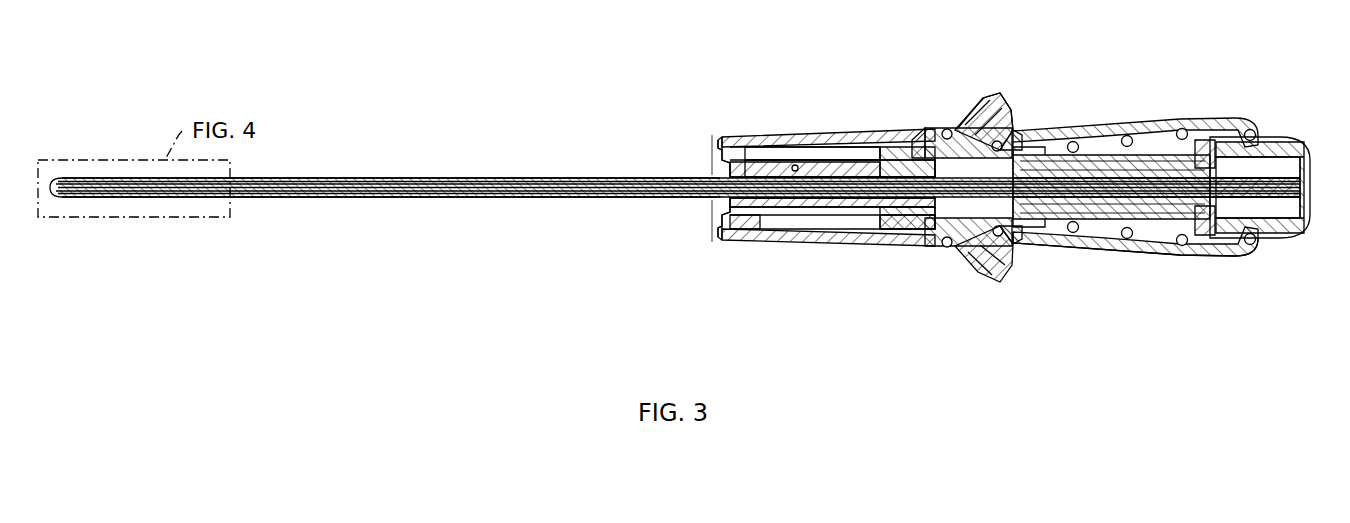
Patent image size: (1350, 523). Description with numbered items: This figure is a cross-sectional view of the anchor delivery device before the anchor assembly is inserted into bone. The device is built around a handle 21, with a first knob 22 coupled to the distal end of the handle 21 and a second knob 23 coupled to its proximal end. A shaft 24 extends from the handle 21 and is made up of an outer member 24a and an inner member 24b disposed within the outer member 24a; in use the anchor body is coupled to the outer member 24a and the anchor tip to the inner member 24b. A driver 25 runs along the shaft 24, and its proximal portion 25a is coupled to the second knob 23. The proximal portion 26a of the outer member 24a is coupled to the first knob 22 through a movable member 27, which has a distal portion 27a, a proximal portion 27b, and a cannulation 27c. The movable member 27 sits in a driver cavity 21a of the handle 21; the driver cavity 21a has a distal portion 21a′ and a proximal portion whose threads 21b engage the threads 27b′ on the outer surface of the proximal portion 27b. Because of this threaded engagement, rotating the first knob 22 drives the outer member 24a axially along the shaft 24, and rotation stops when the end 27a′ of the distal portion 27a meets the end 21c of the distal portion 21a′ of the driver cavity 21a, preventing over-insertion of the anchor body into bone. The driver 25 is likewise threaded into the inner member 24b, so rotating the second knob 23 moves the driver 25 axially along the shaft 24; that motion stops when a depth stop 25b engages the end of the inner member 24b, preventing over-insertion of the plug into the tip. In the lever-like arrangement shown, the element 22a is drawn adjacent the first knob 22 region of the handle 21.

The handle 21 is at (1022, 133).
The driver cavity 21a is at (876, 238).
The distal portion of driver cavity 21a′ is at (748, 241).
The threads 21b is at (988, 273).
The end of distal portion of driver cavity 21c is at (722, 203).
The first knob 22 is at (892, 140).
The lever arm 22a is at (813, 138).
The second knob 23 is at (1290, 140).
The shaft 24 is at (365, 178).
The outer member 24a is at (450, 178).
The inner member 24b is at (557, 178).
The driver 25 is at (406, 178).
The proximal portion of driver 25a is at (1205, 166).
The depth stop 25b is at (1105, 180).
The proximal portion of outer member 26a is at (795, 165).
The movable member 27 is at (957, 138).
The distal portion of movable member 27a is at (870, 165).
The end of distal portion of movable member 27a′ is at (780, 173).
The proximal portion of movable member 27b is at (1010, 138).
The threads 27b′ is at (968, 256).
The cannulation 27c is at (924, 140).